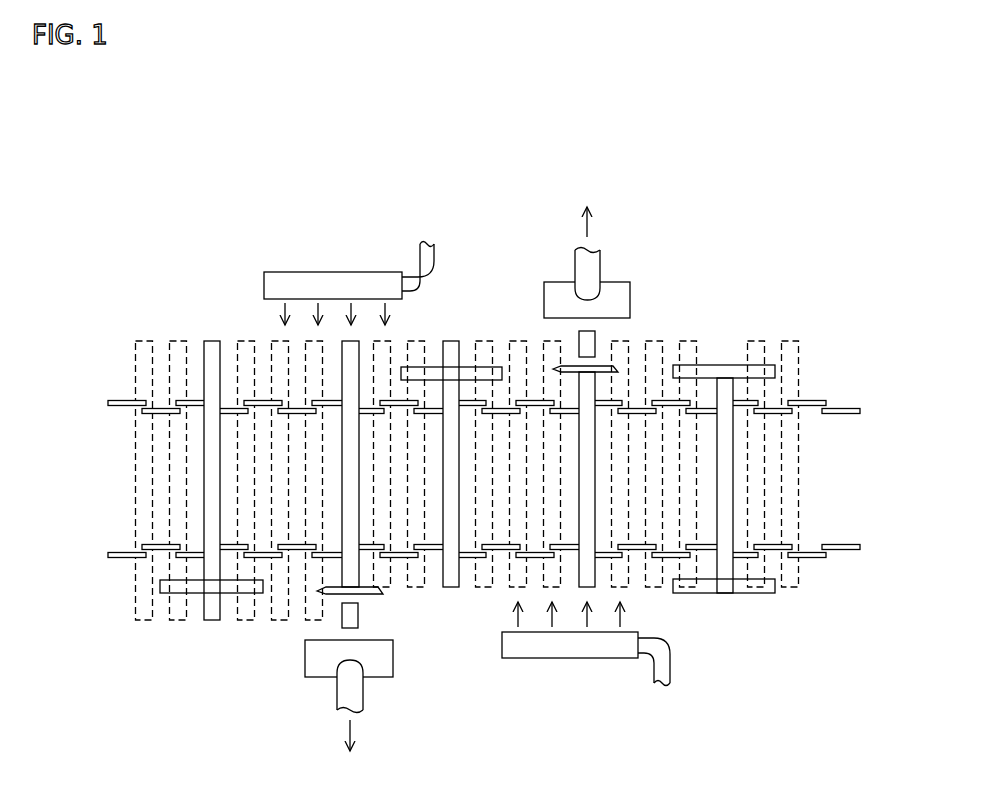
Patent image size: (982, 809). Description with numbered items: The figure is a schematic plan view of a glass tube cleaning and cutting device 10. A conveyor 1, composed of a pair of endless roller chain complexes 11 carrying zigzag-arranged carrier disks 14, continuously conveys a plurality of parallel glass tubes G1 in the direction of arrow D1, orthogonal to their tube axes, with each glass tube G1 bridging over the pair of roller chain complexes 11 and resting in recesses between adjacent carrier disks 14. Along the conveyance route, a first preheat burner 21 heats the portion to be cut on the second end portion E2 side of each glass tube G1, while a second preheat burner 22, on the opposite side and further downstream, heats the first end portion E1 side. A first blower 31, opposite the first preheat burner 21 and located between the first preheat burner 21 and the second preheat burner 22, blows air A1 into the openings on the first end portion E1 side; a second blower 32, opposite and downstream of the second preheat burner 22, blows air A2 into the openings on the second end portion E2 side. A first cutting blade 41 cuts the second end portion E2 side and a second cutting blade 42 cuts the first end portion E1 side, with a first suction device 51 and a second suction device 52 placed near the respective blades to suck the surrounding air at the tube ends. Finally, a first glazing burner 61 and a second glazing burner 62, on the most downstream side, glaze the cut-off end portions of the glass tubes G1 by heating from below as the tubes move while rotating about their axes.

The glass tube cleaning and cutting device 10 is at (148, 246).
The conveyor 1 is at (113, 353).
The roller chain complex 11 is at (117, 397).
The carrier disk 14 is at (125, 410).
The first preheat burner 21 is at (194, 599).
The second preheat burner 22 is at (465, 363).
The first blower 31 is at (327, 266).
The second blower 32 is at (561, 662).
The first cutting blade 41 is at (378, 601).
The second cutting blade 42 is at (617, 357).
The first suction device 51 is at (384, 687).
The second suction device 52 is at (636, 289).
The first glazing burner 61 is at (742, 596).
The second glazing burner 62 is at (739, 363).
The glass tube G1 is at (201, 345).
The first end portion E1 is at (216, 328).
The second end portion E2 is at (212, 627).
The air A1 is at (314, 318).
The air A2 is at (550, 613).
The conveyance direction D1 is at (114, 482).